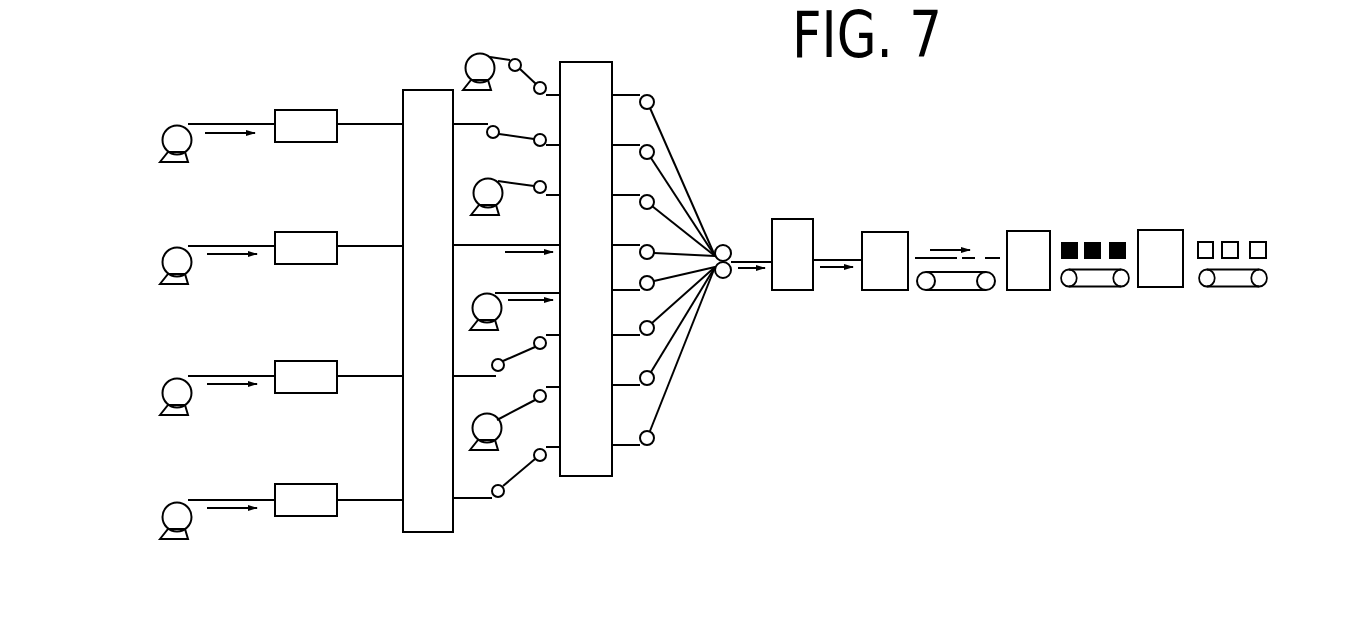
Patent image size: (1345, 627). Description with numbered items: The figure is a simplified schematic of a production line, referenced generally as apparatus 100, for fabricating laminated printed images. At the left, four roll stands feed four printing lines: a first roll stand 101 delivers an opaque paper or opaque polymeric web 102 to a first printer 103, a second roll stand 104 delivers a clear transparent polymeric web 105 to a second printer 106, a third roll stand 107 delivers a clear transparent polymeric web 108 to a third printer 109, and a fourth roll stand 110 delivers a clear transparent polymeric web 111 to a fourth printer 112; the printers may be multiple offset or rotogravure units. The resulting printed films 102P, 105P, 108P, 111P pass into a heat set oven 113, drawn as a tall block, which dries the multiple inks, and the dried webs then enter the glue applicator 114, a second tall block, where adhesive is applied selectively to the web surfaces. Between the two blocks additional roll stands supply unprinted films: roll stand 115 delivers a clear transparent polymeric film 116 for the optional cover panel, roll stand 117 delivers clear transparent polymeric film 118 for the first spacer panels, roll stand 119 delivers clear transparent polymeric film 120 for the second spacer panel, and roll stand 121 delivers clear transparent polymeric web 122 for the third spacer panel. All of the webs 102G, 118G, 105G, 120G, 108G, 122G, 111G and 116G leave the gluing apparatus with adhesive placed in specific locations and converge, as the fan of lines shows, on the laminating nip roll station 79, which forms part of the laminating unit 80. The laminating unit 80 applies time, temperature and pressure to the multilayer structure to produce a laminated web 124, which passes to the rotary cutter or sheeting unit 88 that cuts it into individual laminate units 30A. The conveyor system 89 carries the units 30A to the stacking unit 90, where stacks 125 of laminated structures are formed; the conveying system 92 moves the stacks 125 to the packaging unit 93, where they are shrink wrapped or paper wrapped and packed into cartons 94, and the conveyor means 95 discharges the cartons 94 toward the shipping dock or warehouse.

The apparatus 100 is at (808, 145).
The first roll stand 101 is at (186, 522).
The opaque web 102 is at (225, 500).
The first printer 103 is at (305, 500).
The printed film 102P is at (377, 498).
The second roll stand 104 is at (177, 393).
The clear transparent polymeric web 105 is at (228, 376).
The second printer 106 is at (310, 375).
The printed film 105P is at (367, 375).
The third roll stand 107 is at (177, 262).
The clear transparent polymeric web 108 is at (236, 246).
The third printer 109 is at (312, 247).
The printed film 108P is at (365, 245).
The fourth roll stand 110 is at (177, 140).
The clear transparent polymeric web 111 is at (195, 122).
The fourth printer 112 is at (285, 122).
The printed film 111P is at (363, 122).
The heat set oven 113 is at (415, 532).
The glue applicator 114 is at (590, 477).
The roll stand 115 is at (480, 68).
The clear transparent polymeric film 116 is at (497, 57).
The roll stand 117 is at (490, 427).
The clear transparent polymeric film 118 is at (508, 403).
The roll stand 119 is at (487, 308).
The clear transparent polymeric film 120 is at (554, 289).
The roll stand 121 is at (488, 193).
The clear transparent polymeric web 122 is at (551, 201).
The glued web 116G is at (630, 95).
The glued web 111G is at (633, 140).
The glued web 122G is at (633, 187).
The glued web 108G is at (633, 243).
The glued web 120G is at (693, 303).
The glued web 105G is at (672, 317).
The glued web 118G is at (663, 362).
The glued web 102G is at (662, 422).
The laminating nip roll station 79 is at (722, 245).
The laminating unit 80 is at (790, 232).
The laminated web 124 is at (835, 258).
The rotary cutter or sheeting unit 88 is at (882, 242).
The laminate 30A is at (920, 258).
The conveyor system 89 is at (955, 282).
The stacking unit 90 is at (1025, 243).
The stacks 125 is at (1068, 243).
The conveying system 92 is at (1093, 280).
The packaging unit 93 is at (1162, 242).
The cartons 94 is at (1207, 242).
The conveyor means 95 is at (1232, 280).